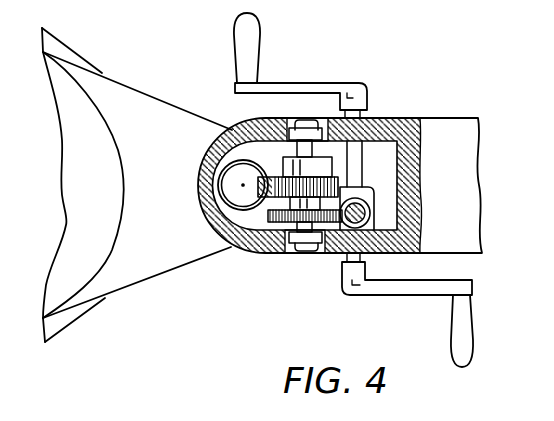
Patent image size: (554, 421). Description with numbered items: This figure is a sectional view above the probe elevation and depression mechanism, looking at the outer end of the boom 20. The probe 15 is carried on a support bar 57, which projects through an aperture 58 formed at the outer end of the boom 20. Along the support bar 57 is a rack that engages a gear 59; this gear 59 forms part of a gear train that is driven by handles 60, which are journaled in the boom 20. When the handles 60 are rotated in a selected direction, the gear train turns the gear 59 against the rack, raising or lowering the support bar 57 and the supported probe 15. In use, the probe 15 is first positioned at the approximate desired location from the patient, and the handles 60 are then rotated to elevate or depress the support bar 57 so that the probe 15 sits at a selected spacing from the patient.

The probe 15 is at (73, 44).
The boom 20 is at (450, 118).
The support bar 57 is at (243, 198).
The aperture 58 is at (236, 160).
The gear 59 is at (338, 183).
The handles 60 is at (472, 330).